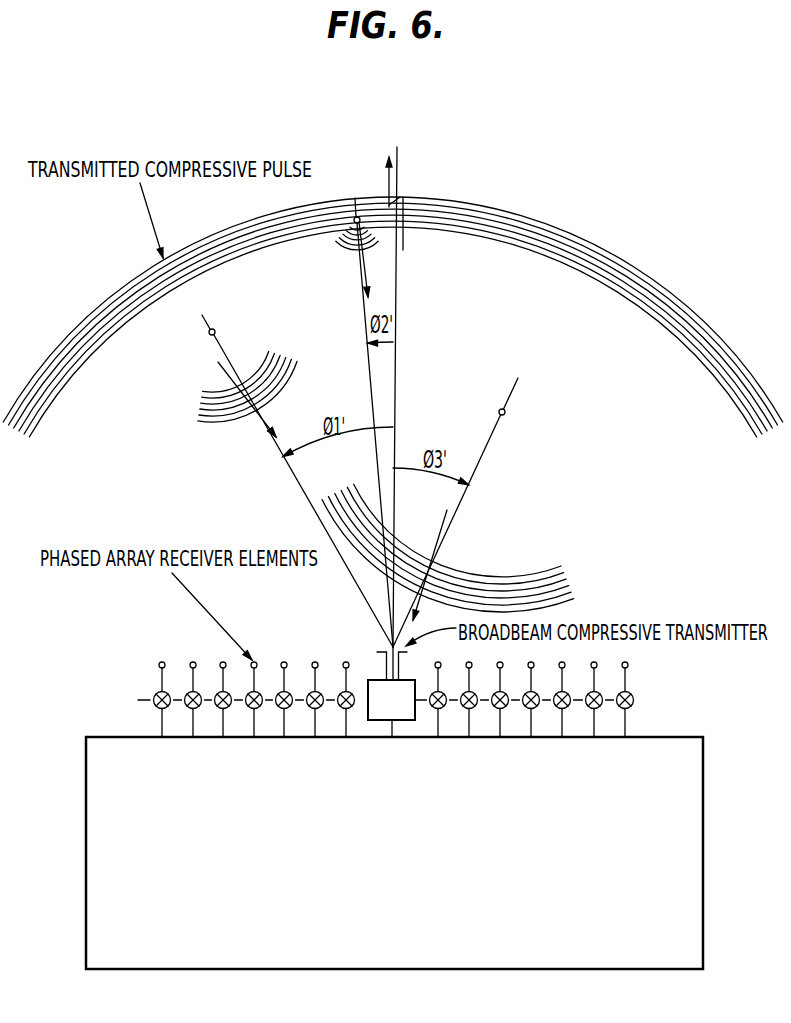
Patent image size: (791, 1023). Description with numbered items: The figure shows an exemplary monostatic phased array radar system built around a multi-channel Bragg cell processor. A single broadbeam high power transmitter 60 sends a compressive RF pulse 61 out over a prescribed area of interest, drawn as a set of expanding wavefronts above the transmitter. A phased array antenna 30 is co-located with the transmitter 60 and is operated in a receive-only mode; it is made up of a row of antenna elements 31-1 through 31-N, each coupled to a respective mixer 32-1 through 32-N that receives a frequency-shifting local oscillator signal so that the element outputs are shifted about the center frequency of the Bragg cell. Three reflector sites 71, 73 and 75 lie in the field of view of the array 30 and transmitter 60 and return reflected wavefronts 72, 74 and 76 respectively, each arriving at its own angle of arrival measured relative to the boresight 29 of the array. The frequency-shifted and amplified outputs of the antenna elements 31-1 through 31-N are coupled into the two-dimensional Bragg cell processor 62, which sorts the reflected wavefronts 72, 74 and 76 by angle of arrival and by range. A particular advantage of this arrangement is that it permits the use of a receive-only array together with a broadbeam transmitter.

The boresight 29 is at (396, 378).
The phased array antenna 30 is at (407, 676).
The antenna element 31-1 is at (163, 662).
The antenna element 31-N is at (630, 665).
The mixer 32-1 is at (156, 706).
The mixer 32-N is at (633, 705).
The broadbeam high power transmitter 60 is at (372, 682).
The compressive RF pulse 61 is at (630, 294).
The two-dimensional Bragg cell processor 62 is at (704, 806).
The reflector site 71 is at (231, 307).
The reflected wavefront 72 is at (244, 376).
The reflector site 73 is at (352, 226).
The reflected wavefront 74 is at (366, 245).
The reflector site 75 is at (506, 409).
The reflected wavefront 76 is at (490, 577).